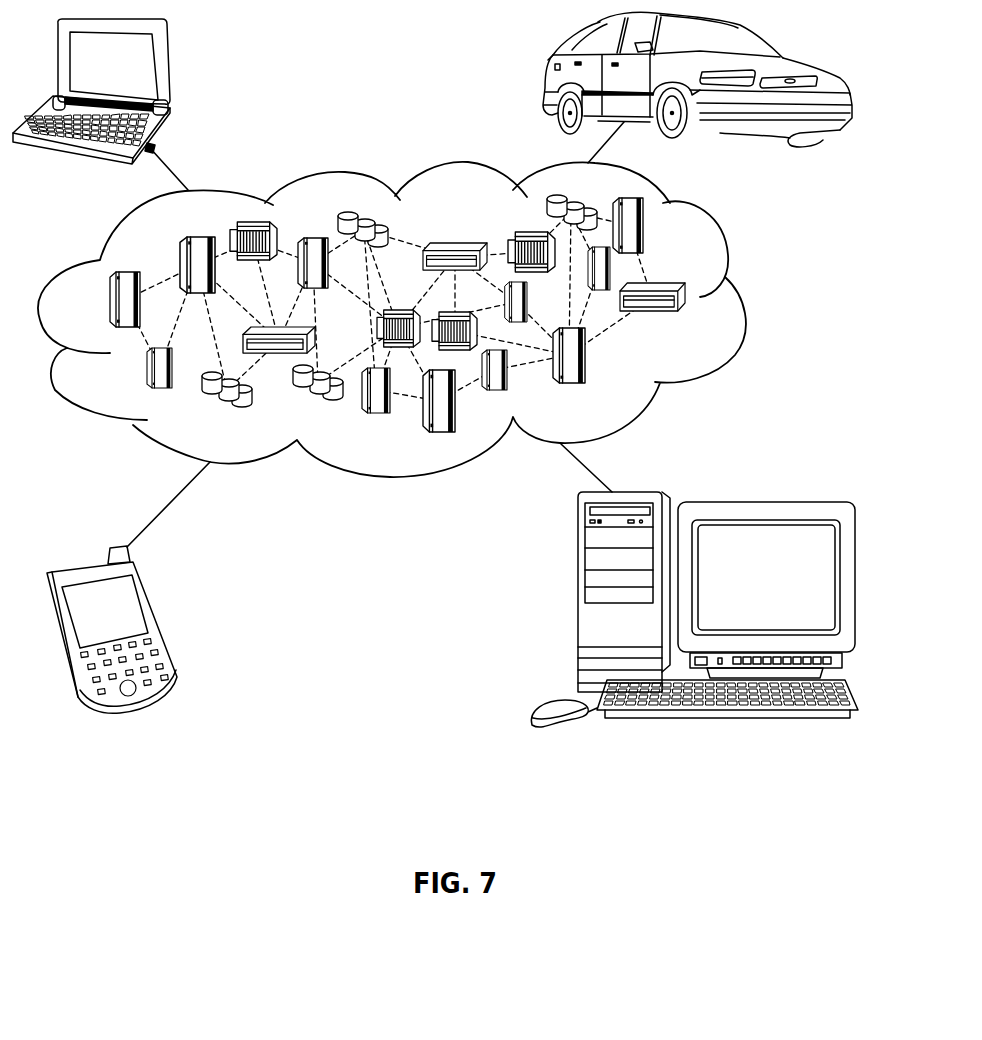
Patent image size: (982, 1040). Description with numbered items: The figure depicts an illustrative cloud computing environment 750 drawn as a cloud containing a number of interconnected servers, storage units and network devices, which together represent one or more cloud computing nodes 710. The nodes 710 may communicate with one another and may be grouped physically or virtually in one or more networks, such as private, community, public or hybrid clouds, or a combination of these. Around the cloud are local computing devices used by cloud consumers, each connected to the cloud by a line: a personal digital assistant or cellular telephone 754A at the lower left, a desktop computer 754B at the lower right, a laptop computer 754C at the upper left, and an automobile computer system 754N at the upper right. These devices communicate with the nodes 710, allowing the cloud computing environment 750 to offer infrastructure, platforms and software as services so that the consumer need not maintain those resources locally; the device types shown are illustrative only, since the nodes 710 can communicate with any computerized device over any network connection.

The cloud computing environment 750 is at (728, 258).
The cloud computing nodes 710 is at (707, 318).
The personal digital assistant (PDA) or cellular telephone 754A is at (162, 620).
The desktop computer 754B is at (577, 598).
The laptop computer 754C is at (170, 65).
The automobile computer system 754N is at (548, 68).